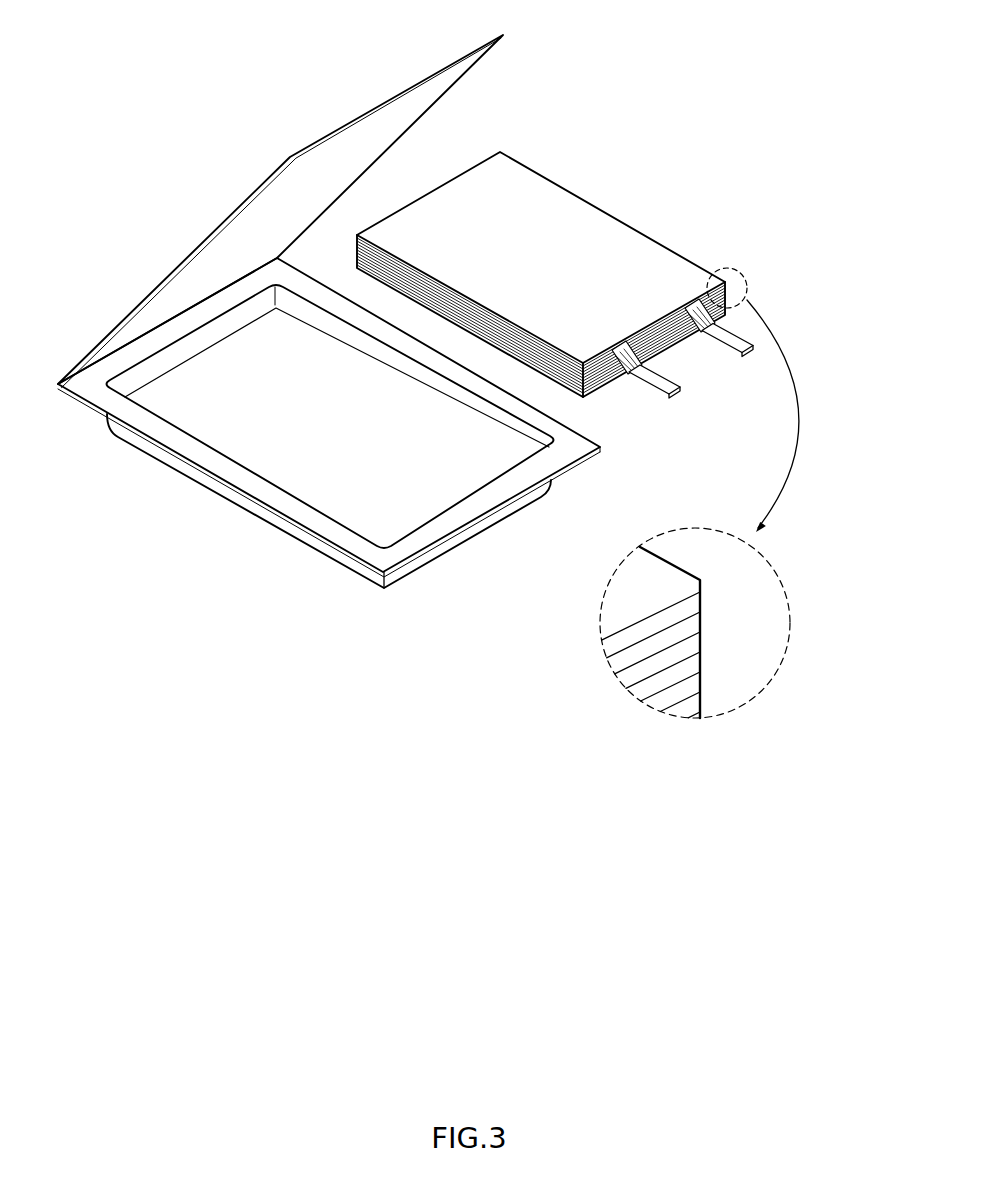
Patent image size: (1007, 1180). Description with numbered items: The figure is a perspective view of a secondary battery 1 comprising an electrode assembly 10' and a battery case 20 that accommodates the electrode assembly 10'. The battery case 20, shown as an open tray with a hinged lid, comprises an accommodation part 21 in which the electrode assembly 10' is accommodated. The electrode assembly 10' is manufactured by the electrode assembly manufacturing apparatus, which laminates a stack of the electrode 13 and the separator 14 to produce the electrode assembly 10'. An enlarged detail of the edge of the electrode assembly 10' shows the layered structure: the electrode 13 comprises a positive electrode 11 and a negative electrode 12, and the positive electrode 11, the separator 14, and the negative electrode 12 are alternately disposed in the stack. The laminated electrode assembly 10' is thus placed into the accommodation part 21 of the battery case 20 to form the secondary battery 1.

The secondary battery 1 is at (731, 45).
The electrode assembly 10' is at (555, 242).
The positive electrode 11 is at (612, 655).
The negative electrode 12 is at (632, 683).
The electrode 13 is at (530, 668).
The separator 14 is at (702, 592).
The battery case 20 is at (280, 556).
The accommodation part 21 is at (275, 458).